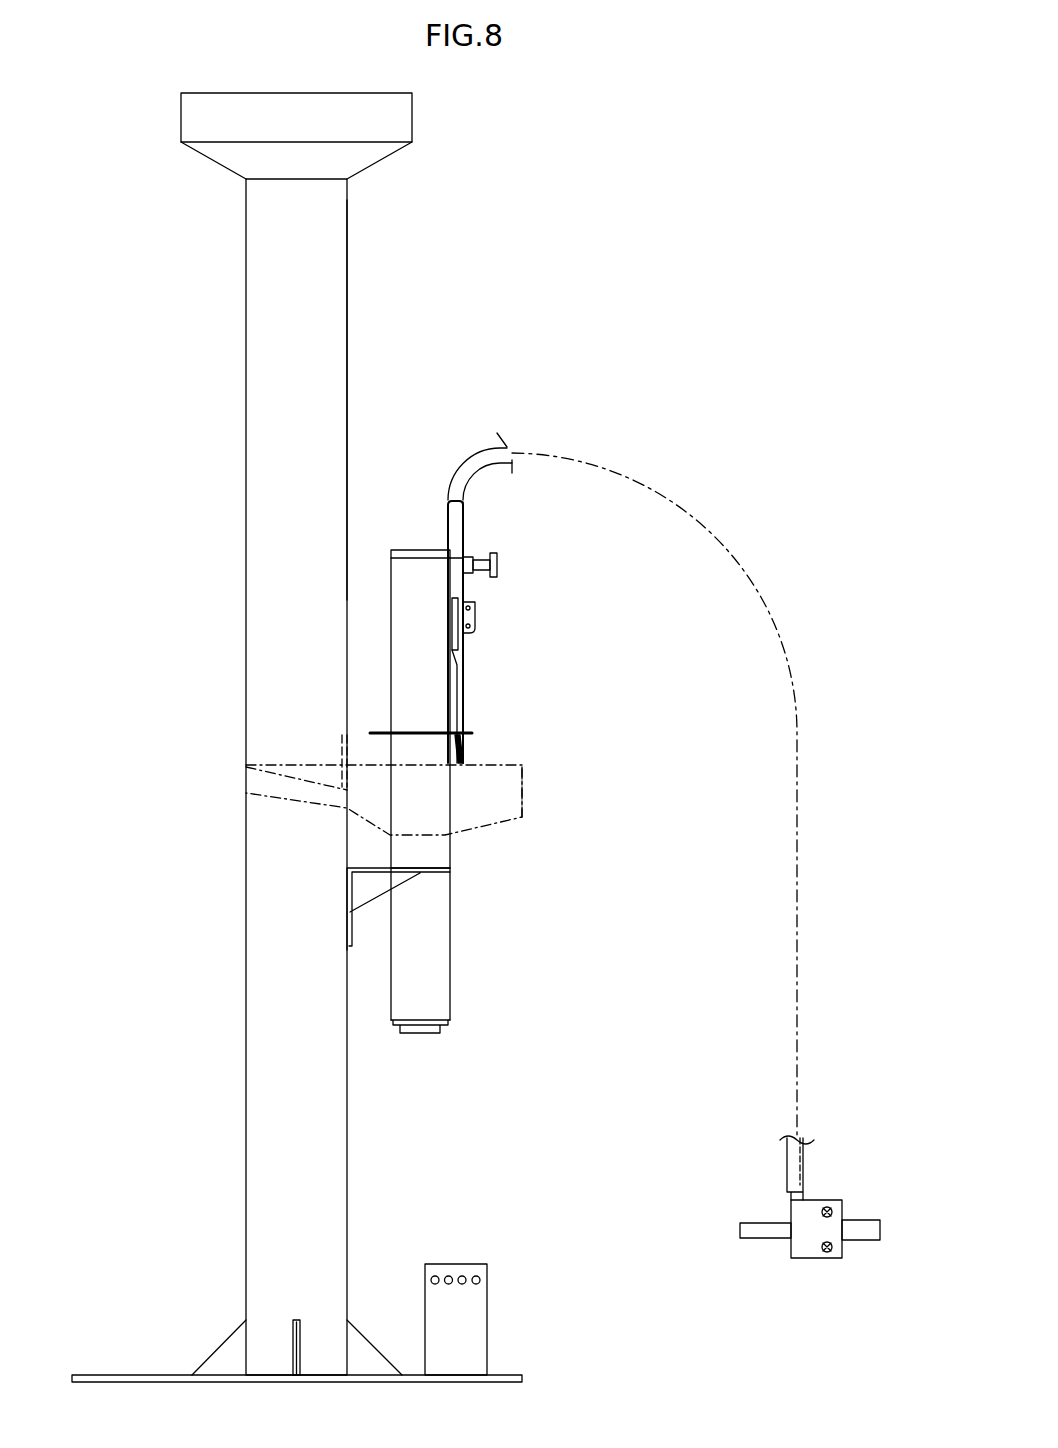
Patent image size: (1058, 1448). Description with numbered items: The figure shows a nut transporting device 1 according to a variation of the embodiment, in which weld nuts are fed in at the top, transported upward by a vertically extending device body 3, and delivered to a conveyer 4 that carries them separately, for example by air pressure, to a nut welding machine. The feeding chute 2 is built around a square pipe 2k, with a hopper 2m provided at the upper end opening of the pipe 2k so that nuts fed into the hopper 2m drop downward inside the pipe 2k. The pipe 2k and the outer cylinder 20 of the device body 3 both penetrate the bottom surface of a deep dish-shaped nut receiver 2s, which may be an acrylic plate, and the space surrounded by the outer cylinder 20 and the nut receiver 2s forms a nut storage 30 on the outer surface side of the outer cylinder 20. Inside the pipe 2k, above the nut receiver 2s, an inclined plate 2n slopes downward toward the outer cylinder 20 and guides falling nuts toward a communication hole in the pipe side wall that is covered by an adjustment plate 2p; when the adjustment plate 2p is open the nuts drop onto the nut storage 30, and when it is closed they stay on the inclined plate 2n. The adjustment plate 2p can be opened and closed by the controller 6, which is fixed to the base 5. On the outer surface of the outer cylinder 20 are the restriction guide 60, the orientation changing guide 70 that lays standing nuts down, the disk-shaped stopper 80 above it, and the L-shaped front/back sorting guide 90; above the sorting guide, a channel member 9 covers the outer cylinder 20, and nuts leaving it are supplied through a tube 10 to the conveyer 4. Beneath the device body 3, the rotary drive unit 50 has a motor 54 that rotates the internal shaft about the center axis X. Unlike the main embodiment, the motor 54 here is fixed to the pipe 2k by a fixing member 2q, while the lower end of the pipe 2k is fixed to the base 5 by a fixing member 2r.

The nut transporting device 1 is at (565, 567).
The feeding chute 2 is at (330, 250).
The pipe 2k is at (330, 310).
The hopper 2m is at (400, 118).
The inclined plate 2n is at (285, 772).
The adjustment plate 2p is at (342, 744).
The fixing member 2q is at (367, 883).
The fixing member 2r is at (225, 1358).
The nut receiver 2s is at (505, 790).
The device body 3 is at (402, 573).
The conveyer 4 is at (812, 1208).
The base 5 is at (125, 1375).
The controller 6 is at (470, 1309).
The channel member 9 is at (460, 585).
The tube 10 is at (465, 468).
The outer cylinder 20 is at (400, 632).
The nut storage 30 is at (370, 805).
The rotary drive unit 50 is at (445, 905).
The motor 54 is at (440, 978).
The restriction guide 60 is at (455, 715).
The orientation changing guide 70 is at (460, 745).
The stopper 80 is at (380, 733).
The front/back sorting guide 90 is at (465, 628).
The center axis X is at (421, 1055).